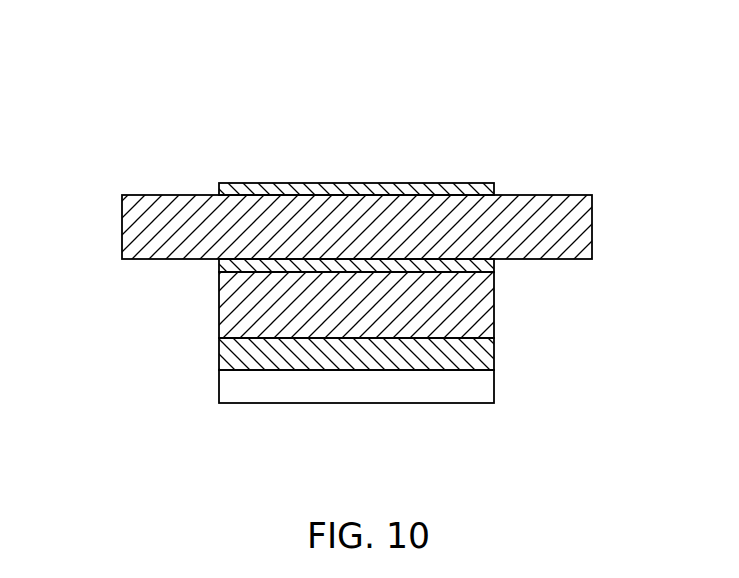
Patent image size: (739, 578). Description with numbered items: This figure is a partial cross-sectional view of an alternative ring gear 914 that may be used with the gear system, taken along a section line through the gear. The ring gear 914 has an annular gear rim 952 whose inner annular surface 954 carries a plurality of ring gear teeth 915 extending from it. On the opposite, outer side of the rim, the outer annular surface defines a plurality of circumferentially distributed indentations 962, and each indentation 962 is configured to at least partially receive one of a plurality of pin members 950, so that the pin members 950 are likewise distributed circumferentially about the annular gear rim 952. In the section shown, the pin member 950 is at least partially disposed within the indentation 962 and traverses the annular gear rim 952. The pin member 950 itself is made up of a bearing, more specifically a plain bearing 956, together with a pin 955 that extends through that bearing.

The ring gear 914 is at (493, 118).
The ring gear teeth 915 is at (403, 388).
The pin member 950 is at (121, 185).
The annular gear rim 952 is at (485, 312).
The inner annular surface 954 is at (279, 340).
The pin 955 is at (155, 208).
The plain bearing 956 is at (270, 188).
The indentation 962 is at (218, 268).